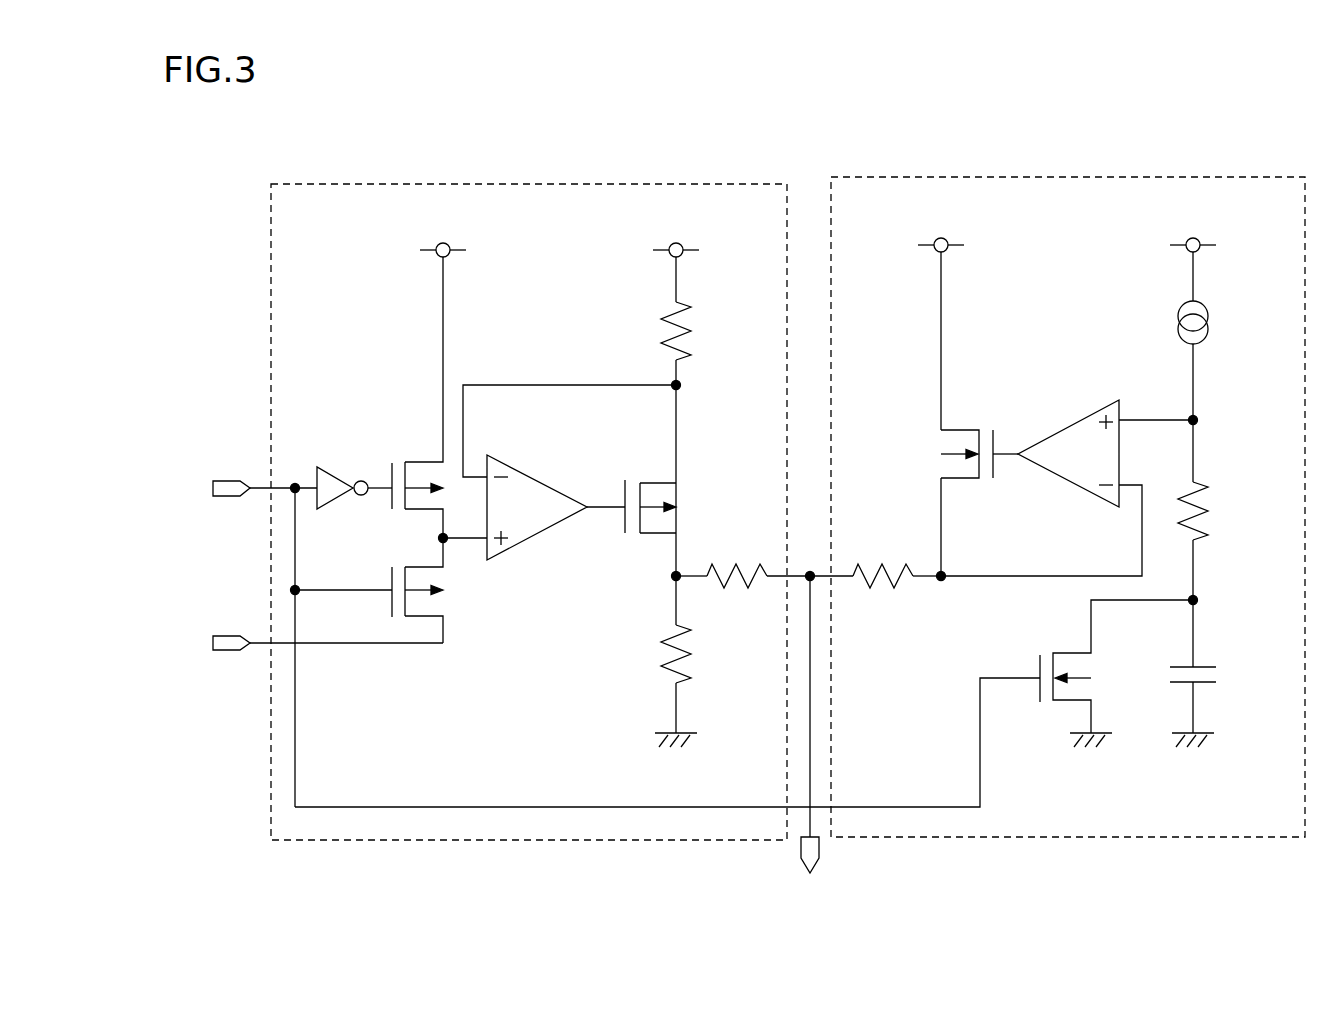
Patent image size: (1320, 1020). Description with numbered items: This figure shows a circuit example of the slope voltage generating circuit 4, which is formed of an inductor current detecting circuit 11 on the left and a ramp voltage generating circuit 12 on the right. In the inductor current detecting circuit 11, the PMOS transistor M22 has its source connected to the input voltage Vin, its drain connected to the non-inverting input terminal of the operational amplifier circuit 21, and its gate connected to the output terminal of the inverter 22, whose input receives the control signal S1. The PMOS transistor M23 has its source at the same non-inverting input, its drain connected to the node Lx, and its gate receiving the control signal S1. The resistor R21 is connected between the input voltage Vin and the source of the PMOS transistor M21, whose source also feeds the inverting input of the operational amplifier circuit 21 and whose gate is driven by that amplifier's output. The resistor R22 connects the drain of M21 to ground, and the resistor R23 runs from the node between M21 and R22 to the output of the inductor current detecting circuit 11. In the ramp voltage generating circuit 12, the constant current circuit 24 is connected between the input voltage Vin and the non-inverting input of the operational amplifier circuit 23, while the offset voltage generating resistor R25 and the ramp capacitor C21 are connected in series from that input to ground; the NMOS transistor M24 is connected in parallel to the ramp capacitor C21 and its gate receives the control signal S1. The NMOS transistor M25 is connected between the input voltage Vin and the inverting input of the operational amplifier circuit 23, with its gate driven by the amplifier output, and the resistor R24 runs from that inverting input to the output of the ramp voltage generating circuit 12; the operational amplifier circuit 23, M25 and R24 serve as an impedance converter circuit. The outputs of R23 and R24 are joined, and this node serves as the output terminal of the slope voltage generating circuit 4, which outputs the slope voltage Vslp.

The slope voltage generating circuit 4 is at (818, 110).
The inductor current detecting circuit 11 is at (574, 176).
The ramp voltage generating circuit 12 is at (1079, 171).
The operational amplifier circuit 21 is at (540, 476).
The inverter 22 is at (340, 470).
The operational amplifier circuit 23 is at (1070, 424).
The constant current circuit 24 is at (1178, 310).
The PMOS transistor M21 is at (650, 494).
The PMOS transistor M22 is at (417, 397).
The PMOS transistor M23 is at (417, 590).
The NMOS transistor M24 is at (1114, 666).
The NMOS transistor M25 is at (979, 414).
The resistor R21 is at (654, 321).
The resistor R22 is at (654, 654).
The resistor R23 is at (743, 562).
The resistor R24 is at (875, 562).
The offset voltage generating resistor R25 is at (1215, 510).
The ramp capacitor C21 is at (1217, 666).